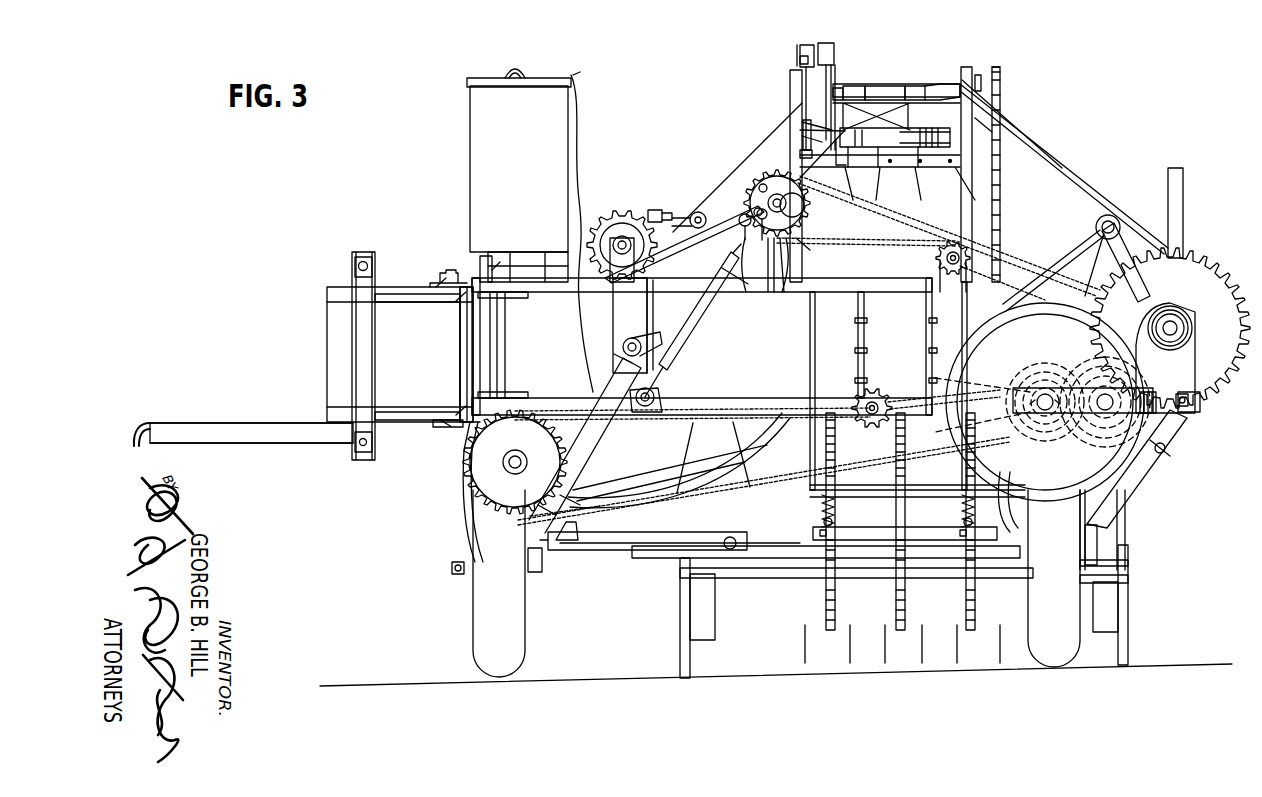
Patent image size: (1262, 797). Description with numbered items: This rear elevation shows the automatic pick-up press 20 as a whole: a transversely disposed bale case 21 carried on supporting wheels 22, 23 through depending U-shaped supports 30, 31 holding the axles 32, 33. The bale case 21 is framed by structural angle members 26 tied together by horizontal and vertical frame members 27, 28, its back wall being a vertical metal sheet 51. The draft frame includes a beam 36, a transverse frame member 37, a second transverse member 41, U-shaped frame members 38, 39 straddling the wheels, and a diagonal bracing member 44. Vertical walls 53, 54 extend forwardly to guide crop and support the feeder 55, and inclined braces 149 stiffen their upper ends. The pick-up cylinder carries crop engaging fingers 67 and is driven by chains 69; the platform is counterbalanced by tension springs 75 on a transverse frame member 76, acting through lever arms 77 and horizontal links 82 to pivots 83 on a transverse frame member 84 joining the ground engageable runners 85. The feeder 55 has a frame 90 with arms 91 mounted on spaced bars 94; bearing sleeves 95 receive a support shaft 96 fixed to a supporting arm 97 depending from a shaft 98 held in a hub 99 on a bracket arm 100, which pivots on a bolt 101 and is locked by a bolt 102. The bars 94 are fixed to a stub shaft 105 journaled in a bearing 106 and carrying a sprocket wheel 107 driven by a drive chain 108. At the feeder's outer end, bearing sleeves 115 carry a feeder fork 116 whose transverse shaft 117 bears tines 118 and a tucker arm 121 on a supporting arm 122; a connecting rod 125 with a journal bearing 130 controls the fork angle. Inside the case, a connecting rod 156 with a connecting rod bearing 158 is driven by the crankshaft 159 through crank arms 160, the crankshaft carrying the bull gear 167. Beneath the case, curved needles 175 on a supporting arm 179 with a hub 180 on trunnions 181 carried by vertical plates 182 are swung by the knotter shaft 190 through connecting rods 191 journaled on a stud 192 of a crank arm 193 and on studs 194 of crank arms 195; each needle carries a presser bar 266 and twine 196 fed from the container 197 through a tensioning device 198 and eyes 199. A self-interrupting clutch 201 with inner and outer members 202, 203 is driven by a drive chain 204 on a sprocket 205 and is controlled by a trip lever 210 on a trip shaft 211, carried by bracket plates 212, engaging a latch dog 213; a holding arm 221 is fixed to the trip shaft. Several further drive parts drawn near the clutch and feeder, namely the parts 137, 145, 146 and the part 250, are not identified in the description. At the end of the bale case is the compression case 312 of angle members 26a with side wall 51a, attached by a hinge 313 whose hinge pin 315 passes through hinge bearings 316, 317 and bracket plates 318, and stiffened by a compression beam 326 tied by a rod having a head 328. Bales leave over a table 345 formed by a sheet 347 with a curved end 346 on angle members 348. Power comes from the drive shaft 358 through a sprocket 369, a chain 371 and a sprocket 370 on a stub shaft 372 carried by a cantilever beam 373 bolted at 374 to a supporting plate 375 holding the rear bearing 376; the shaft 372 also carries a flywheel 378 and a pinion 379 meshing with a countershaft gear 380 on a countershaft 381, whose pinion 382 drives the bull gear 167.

The automatic pick-up press 20 is at (386, 186).
The bale case 21 is at (740, 358).
The supporting wheel 22 is at (503, 662).
The supporting wheel 23 is at (1047, 661).
The structural angle member 26 is at (548, 300).
The structural angle member 26a is at (390, 293).
The horizontal frame member 27 is at (500, 286).
The vertical frame member 28 is at (497, 333).
The depending support 30 is at (470, 521).
The depending support 31 is at (1013, 518).
The axle 32 is at (451, 571).
The axle 33 is at (1125, 563).
The structural beam 36 is at (660, 558).
The transverse frame member 37 is at (566, 532).
The U-shaped frame member 38 is at (542, 552).
The U-shaped frame member 39 is at (1100, 535).
The second transverse member 41 is at (608, 540).
The diagonal bracing member 44 is at (588, 515).
The vertical metal sheet 51 is at (795, 418).
The side wall 51a is at (384, 351).
The vertical wall 53 is at (800, 125).
The vertical wall 54 is at (973, 190).
The feeder 55 is at (923, 63).
The crop engaging fingers 67 is at (805, 655).
The chains 69 is at (895, 604).
The tension springs 75 is at (960, 512).
The transverse frame member 76 is at (1000, 536).
The lever arms 77 is at (826, 592).
The horizontal links 82 is at (735, 586).
The pivots 83 is at (1128, 580).
The transverse frame member 84 is at (772, 580).
The ground engageable runners 85 is at (682, 640).
The feeder frame 90 is at (910, 120).
The arms 91 is at (866, 172).
The bars 94 is at (843, 88).
The bearing sleeves 95 is at (852, 86).
The support shaft 96 is at (878, 86).
The supporting arm 97 is at (833, 66).
The shaft 98 is at (797, 52).
The hub 99 is at (806, 44).
The bracket arm 100 is at (800, 61).
The bolt 101 is at (790, 88).
The bolt 102 is at (798, 157).
The stub shaft 105 is at (942, 85).
The bearing 106 is at (978, 75).
The sprocket wheel 107 is at (1001, 72).
The drive chain 108 is at (1004, 150).
The bearing sleeves 115 is at (850, 168).
The feeder fork 116 is at (990, 120).
The transverse shaft 117 is at (1001, 162).
The tines 118 is at (877, 168).
The tucker arm 121 is at (800, 138).
The supporting arm 122 is at (806, 206).
The connecting rod 125 is at (800, 106).
The journal bearing 130 is at (826, 42).
The sprocket 137 is at (938, 260).
The chain 145 is at (858, 272).
The chain 146 is at (930, 238).
The braces 149 is at (1062, 165).
The connecting rod 156 is at (1064, 250).
The connecting rod bearing 158 is at (1107, 220).
The crankshaft 159 is at (1174, 325).
The crank arms 160 is at (1128, 250).
The bull gear 167 is at (1207, 272).
The curved needles 175 is at (658, 508).
The supporting arm 179 is at (597, 430).
The hub 180 is at (632, 338).
The trunnions 181 is at (652, 348).
The vertical plates 182 is at (648, 306).
The knotter shaft 190 is at (757, 187).
The connecting rods 191 is at (698, 326).
The stud 192 is at (656, 393).
The crank arm 193 is at (642, 412).
The studs 194 is at (745, 282).
The crank arms 195 is at (769, 285).
The twine 196 is at (578, 122).
The container 197 is at (470, 140).
The tensioning device 198 is at (556, 254).
The eyes 199 is at (604, 365).
The self-interrupting clutch mechanism 201 is at (760, 173).
The inner clutch member 202 is at (806, 247).
The outer clutch member 203 is at (740, 212).
The drive chain 204 is at (1042, 252).
The sprocket 205 is at (800, 226).
The trip lever 210 is at (724, 236).
The trip shaft 211 is at (692, 216).
The supporting bracket plates 212 is at (648, 306).
The latch dog 213 is at (781, 296).
The holding arm 221 is at (650, 207).
The gear 250 is at (610, 216).
The presser bar 266 is at (684, 470).
The compression case 312 is at (312, 284).
The hinge 313 is at (456, 359).
The hinge pin 315 is at (453, 270).
The tubular hinge bearing 316 is at (459, 300).
The tubular hinge bearing 317 is at (500, 392).
The bracket plates 318 is at (444, 280).
The compression beam member 326 is at (380, 270).
The head 328 is at (363, 257).
The table 345 is at (173, 410).
The downwardly curved end 346 is at (134, 428).
The plate 347 is at (262, 424).
The structural angle members 348 is at (233, 444).
The drive shaft 358 is at (514, 451).
The sprocket 369 is at (568, 466).
The sprocket 370 is at (1022, 425).
The chain 371 is at (742, 494).
The stub shaft 372 is at (1046, 395).
The cantilever beam 373 is at (1076, 414).
The bolt connection 374 is at (1190, 419).
The supporting plate 375 is at (1203, 412).
The rear bearing 376 is at (1160, 322).
The flywheel 378 is at (1140, 468).
The pinion 379 is at (1030, 385).
The countershaft gear 380 is at (1098, 440).
The countershaft 381 is at (1190, 383).
The countershaft pinion 382 is at (1165, 450).